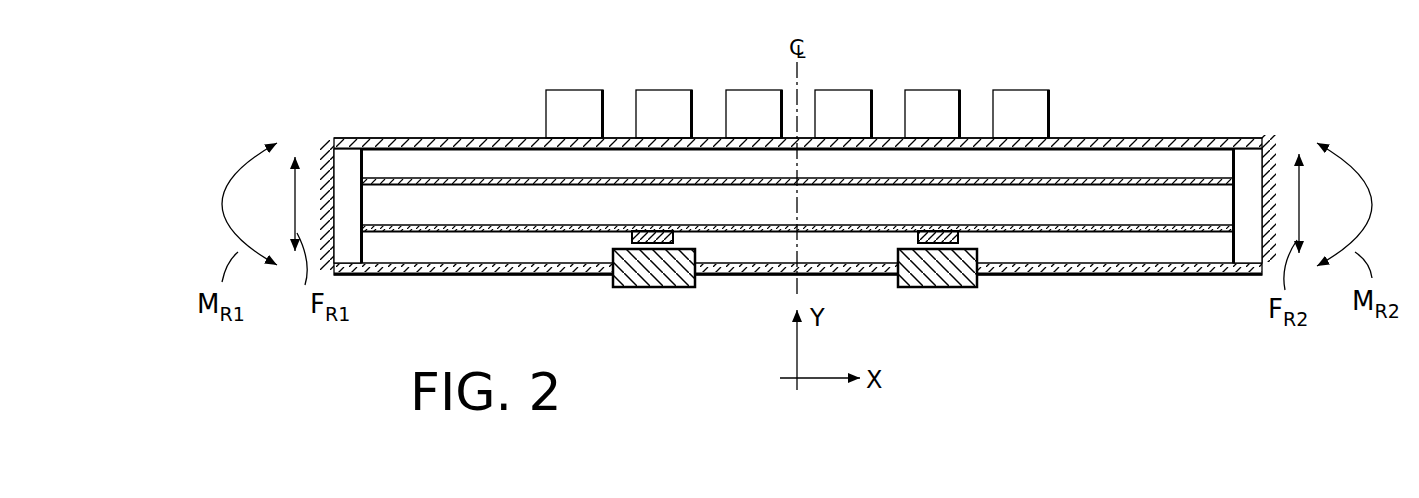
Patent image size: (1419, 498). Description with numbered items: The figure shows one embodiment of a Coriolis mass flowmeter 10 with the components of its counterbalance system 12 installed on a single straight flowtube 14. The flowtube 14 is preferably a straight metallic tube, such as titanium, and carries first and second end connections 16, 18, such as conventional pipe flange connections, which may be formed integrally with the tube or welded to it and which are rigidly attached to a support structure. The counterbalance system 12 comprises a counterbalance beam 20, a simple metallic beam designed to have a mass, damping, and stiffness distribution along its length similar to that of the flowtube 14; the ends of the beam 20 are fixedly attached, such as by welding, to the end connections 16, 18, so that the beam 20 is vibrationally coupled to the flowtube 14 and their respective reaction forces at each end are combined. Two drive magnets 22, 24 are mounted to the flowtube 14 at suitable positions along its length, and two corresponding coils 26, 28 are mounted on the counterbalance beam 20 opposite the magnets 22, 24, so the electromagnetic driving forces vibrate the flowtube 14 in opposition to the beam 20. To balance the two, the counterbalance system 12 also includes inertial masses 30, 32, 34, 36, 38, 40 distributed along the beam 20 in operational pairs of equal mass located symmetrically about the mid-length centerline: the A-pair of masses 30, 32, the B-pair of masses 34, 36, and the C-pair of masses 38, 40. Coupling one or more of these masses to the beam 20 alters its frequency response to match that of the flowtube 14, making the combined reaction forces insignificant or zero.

The Coriolis mass flowmeter 10 is at (1157, 125).
The counterbalance system 12 is at (517, 127).
The flowtube 14 is at (398, 233).
The first end connection 16 is at (350, 137).
The second end connection 18 is at (1243, 147).
The counterbalance beam 20 is at (1070, 137).
The drive magnet 22 is at (633, 238).
The drive magnet 24 is at (960, 238).
The coil 26 is at (657, 288).
The coil 28 is at (947, 288).
The inertial mass 30 is at (753, 90).
The inertial mass 32 is at (847, 90).
The inertial mass 34 is at (668, 90).
The inertial mass 36 is at (927, 90).
The inertial mass 38 is at (583, 90).
The inertial mass 40 is at (1018, 90).